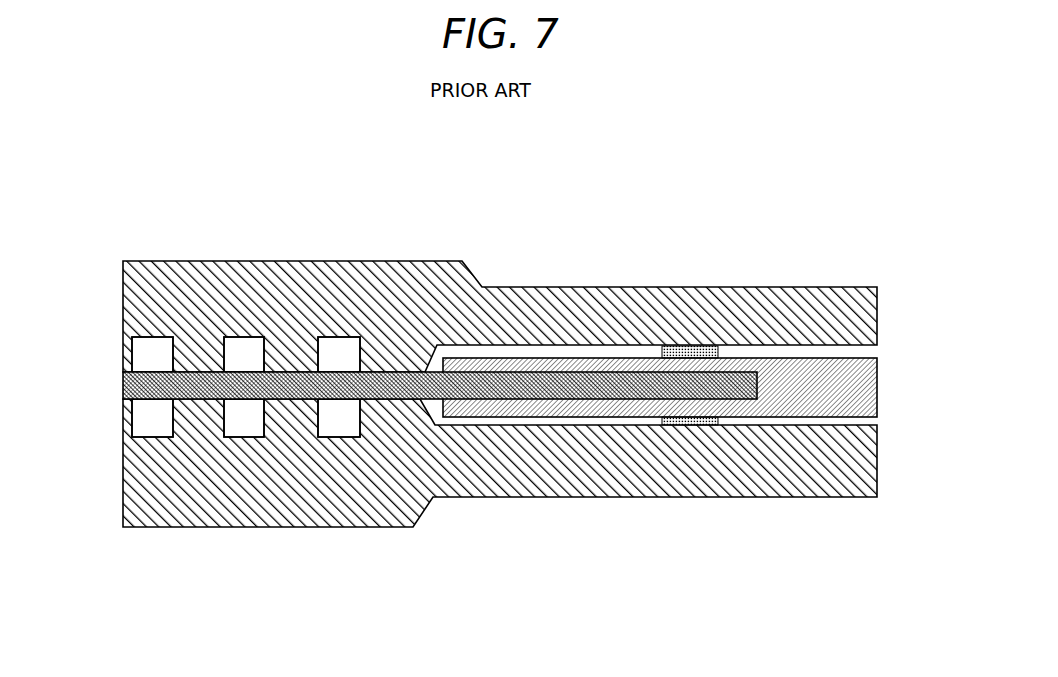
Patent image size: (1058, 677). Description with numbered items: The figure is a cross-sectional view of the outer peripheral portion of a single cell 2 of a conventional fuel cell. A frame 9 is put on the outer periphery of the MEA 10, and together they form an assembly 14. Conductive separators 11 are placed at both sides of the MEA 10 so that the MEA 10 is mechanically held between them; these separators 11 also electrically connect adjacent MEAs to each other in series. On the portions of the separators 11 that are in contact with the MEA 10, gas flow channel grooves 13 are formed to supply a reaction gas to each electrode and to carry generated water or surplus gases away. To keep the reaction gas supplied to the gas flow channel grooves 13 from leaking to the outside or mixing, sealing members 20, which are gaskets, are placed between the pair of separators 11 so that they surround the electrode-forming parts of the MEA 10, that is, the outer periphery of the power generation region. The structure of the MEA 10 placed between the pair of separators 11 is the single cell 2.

The cell 2 is at (179, 108).
The frame 9 is at (520, 358).
The MEA 10 is at (125, 385).
The conductive separator 11 is at (372, 262).
The gas flow channel groove 13 is at (122, 340).
The assembly 14 is at (505, 309).
The sealing member 20 is at (700, 352).